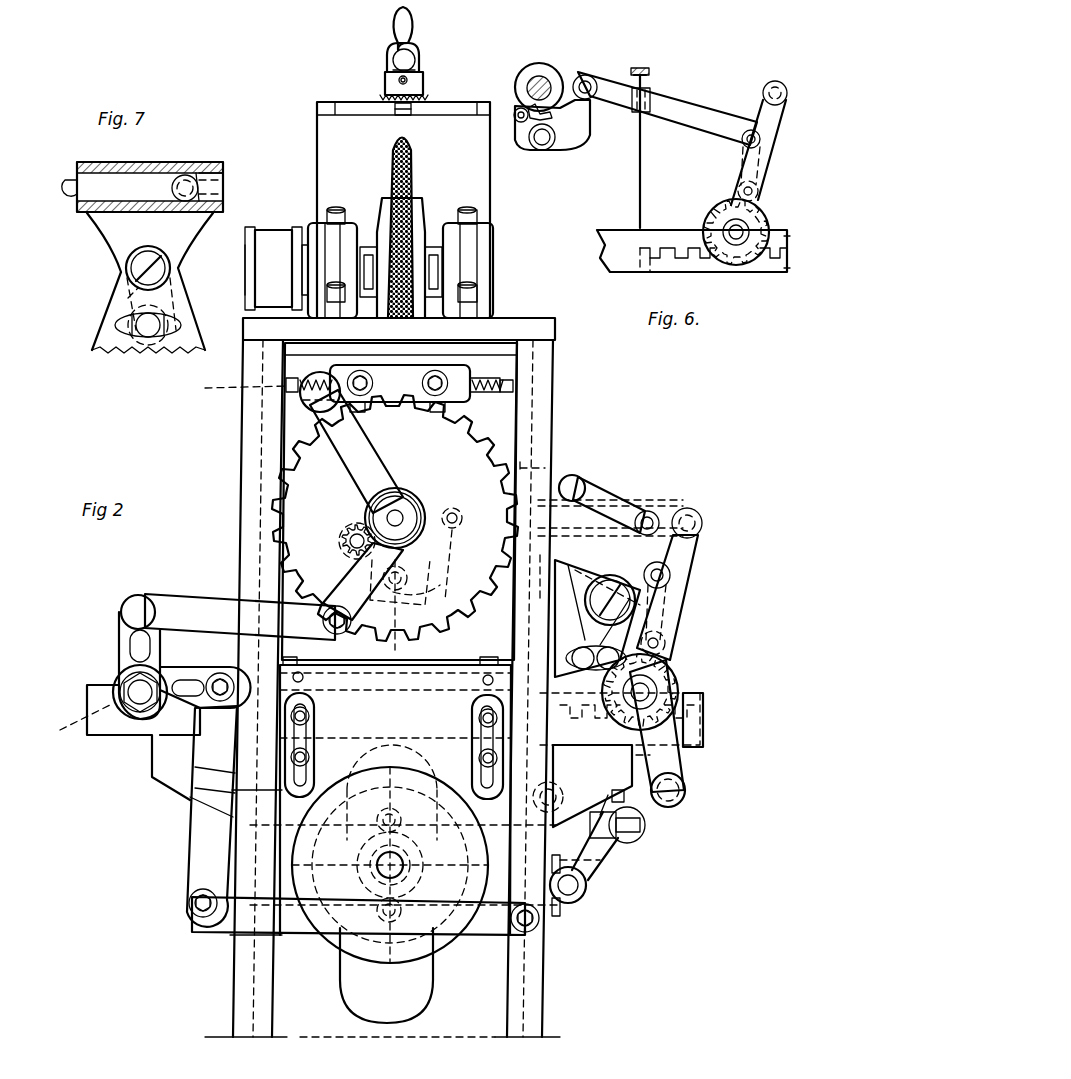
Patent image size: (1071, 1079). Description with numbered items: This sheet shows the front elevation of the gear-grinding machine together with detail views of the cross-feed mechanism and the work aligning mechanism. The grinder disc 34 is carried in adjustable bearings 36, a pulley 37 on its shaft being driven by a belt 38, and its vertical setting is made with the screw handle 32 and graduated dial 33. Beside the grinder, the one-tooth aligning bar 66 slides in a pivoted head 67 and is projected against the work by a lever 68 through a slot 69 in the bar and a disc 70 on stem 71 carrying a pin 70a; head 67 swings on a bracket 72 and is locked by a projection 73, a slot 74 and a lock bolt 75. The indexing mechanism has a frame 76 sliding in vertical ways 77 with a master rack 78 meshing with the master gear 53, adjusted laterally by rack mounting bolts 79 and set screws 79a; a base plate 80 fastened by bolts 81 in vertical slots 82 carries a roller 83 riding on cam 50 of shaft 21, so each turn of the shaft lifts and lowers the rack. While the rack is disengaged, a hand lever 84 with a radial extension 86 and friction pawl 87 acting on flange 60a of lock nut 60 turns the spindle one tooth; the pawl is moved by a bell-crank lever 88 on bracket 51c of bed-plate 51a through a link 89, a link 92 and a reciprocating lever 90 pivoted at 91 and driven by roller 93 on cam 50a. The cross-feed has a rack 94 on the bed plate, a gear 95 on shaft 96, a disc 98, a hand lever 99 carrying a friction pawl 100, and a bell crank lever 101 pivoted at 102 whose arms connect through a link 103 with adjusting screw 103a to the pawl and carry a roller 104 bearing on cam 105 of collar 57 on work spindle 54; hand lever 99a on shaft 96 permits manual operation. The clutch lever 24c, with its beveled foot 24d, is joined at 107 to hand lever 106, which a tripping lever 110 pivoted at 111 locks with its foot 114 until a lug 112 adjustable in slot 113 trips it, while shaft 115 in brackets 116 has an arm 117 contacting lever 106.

In FIG. 2, the shaft 21 is at (385, 865).
In FIG. 2, the clutch lever 24c is at (402, 792).
In FIG. 2, the foot 24d is at (595, 868).
In FIG. 2, the handle 32 is at (418, 58).
In FIG. 2, the graduated dial 33 is at (424, 96).
In FIG. 2, the grinder disc 34 is at (412, 192).
In FIG. 2, the adjustable bearings 36 is at (478, 252).
In FIG. 2, the pulley 37 is at (245, 268).
In FIG. 2, the belt 38 is at (275, 235).
In FIG. 2, the cam 50 is at (445, 888).
In FIG. 2, the cam 50a is at (428, 948).
In FIG. 6, the bed-plate 51a is at (790, 236).
In FIG. 2, the bed-plate 51a is at (95, 703).
In FIG. 2, the bracket 51c is at (73, 725).
In FIG. 2, the master gear 53 is at (395, 518).
In FIG. 6, the spindle 54 is at (536, 82).
In FIG. 6, the collar 57 is at (555, 78).
In FIG. 2, the nut 60 is at (375, 505).
In FIG. 2, the flange 60a is at (405, 500).
In FIG. 7, the aligning bar 66 is at (66, 180).
In FIG. 2, the aligning bar 66 is at (549, 577).
In FIG. 7, the pivoted head 67 is at (112, 232).
In FIG. 2, the lever 68 is at (612, 500).
In FIG. 7, the slot 69 is at (204, 175).
In FIG. 7, the disc 70 is at (205, 190).
In FIG. 7, the pin 70a is at (258, 176).
In FIG. 7, the stem 71 is at (225, 178).
In FIG. 2, the stem 71 is at (660, 520).
In FIG. 7, the bracket 72 is at (118, 324).
In FIG. 2, the bracket 72 is at (596, 598).
In FIG. 7, the projection 73 is at (128, 298).
In FIG. 2, the projection 73 is at (598, 636).
In FIG. 7, the slot 74 is at (135, 330).
In FIG. 2, the slot 74 is at (580, 658).
In FIG. 7, the lock bolt 75 is at (140, 333).
In FIG. 2, the lock bolt 75 is at (640, 668).
In FIG. 7, the frame 76 is at (130, 272).
In FIG. 2, the frame 76 is at (508, 315).
In FIG. 2, the vertical ways 77 is at (580, 475).
In FIG. 2, the master rack 78 is at (400, 372).
In FIG. 2, the rack mounting bolts 79 is at (360, 372).
In FIG. 2, the set screws 79a is at (288, 380).
In FIG. 2, the base plate 80 is at (385, 715).
In FIG. 2, the bolts 81 is at (312, 758).
In FIG. 2, the vertical slots 82 is at (300, 790).
In FIG. 2, the roller 83 is at (383, 806).
In FIG. 2, the hand lever 84 is at (358, 457).
In FIG. 2, the radial extension 86 is at (352, 530).
In FIG. 2, the friction pawl 87 is at (352, 565).
In FIG. 2, the bell-crank lever 88 is at (119, 640).
In FIG. 2, the link 89 is at (192, 595).
In FIG. 2, the reciprocating lever 90 is at (292, 920).
In FIG. 2, the pivot 91 is at (540, 940).
In FIG. 2, the link 92 is at (200, 838).
In FIG. 2, the roller 93 is at (390, 925).
In FIG. 6, the rack 94 is at (775, 262).
In FIG. 2, the rack 94 is at (690, 738).
In FIG. 6, the gear 95 is at (770, 222).
In FIG. 2, the gear 95 is at (680, 672).
In FIG. 6, the shaft 96 is at (725, 228).
In FIG. 2, the shaft 96 is at (660, 688).
In FIG. 6, the disc 98 is at (758, 215).
In FIG. 2, the disc 98 is at (668, 664).
In FIG. 6, the hand lever 99 is at (780, 125).
In FIG. 2, the hand lever 99 is at (685, 560).
In FIG. 2, the hand lever 99a is at (688, 782).
In FIG. 6, the friction pawl 100 is at (745, 168).
In FIG. 2, the friction pawl 100 is at (690, 600).
In FIG. 6, the bell crank lever 101 is at (575, 148).
In FIG. 2, the bell crank lever 101 is at (440, 562).
In FIG. 2, the pivot 102 is at (367, 630).
In FIG. 6, the link 103 is at (696, 108).
In FIG. 2, the link 103 is at (470, 500).
In FIG. 6, the adjusting screw 103a is at (640, 196).
In FIG. 6, the roller 104 is at (518, 122).
In FIG. 2, the roller 104 is at (342, 535).
In FIG. 6, the cam 105 is at (565, 110).
In FIG. 2, the cam 105 is at (410, 580).
In FIG. 2, the hand lever 106 is at (645, 835).
In FIG. 2, the connection 107 is at (618, 815).
In FIG. 2, the tripping lever 110 is at (640, 760).
In FIG. 2, the pivot 111 is at (542, 784).
In FIG. 2, the lug 112 is at (707, 722).
In FIG. 2, the slot 113 is at (695, 762).
In FIG. 2, the foot 114 is at (630, 800).
In FIG. 2, the shaft 115 is at (590, 893).
In FIG. 2, the brackets 116 is at (565, 908).
In FIG. 2, the arm 117 is at (620, 856).